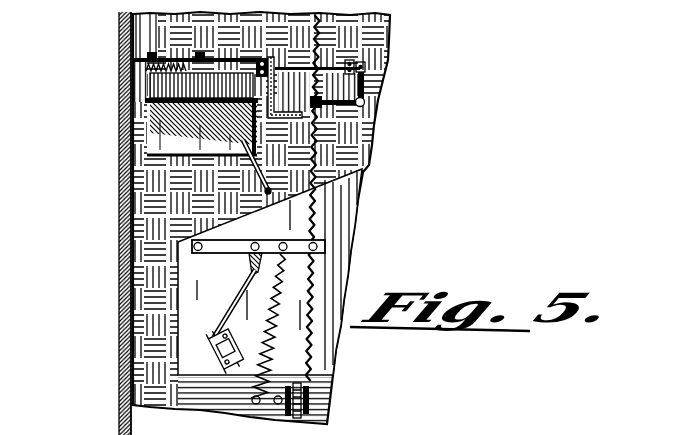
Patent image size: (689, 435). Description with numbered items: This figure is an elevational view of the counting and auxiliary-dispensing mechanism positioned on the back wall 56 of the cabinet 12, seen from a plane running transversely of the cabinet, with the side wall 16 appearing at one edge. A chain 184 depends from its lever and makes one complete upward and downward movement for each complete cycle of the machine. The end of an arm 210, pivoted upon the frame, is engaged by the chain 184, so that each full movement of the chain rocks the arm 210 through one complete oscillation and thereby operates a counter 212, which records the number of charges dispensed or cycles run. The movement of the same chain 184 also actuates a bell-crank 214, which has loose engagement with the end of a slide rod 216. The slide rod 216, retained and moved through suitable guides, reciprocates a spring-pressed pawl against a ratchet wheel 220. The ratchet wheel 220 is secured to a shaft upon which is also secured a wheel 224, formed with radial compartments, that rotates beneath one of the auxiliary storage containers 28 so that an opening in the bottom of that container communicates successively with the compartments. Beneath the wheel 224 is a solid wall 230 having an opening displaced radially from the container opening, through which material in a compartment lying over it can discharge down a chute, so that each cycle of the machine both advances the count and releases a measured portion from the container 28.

The cabinet 12 is at (118, 221).
The side wall 16 is at (120, 298).
The auxiliary container 28 is at (178, 30).
The back wall 56 is at (160, 191).
The chain 184 is at (313, 345).
The arm 210 is at (233, 248).
The counter 212 is at (220, 371).
The bell-crank 214 is at (366, 92).
The slide rod 216 is at (333, 66).
The ratchet wheel 220 is at (147, 83).
The wheel 224 is at (180, 95).
The solid wall 230 is at (163, 102).